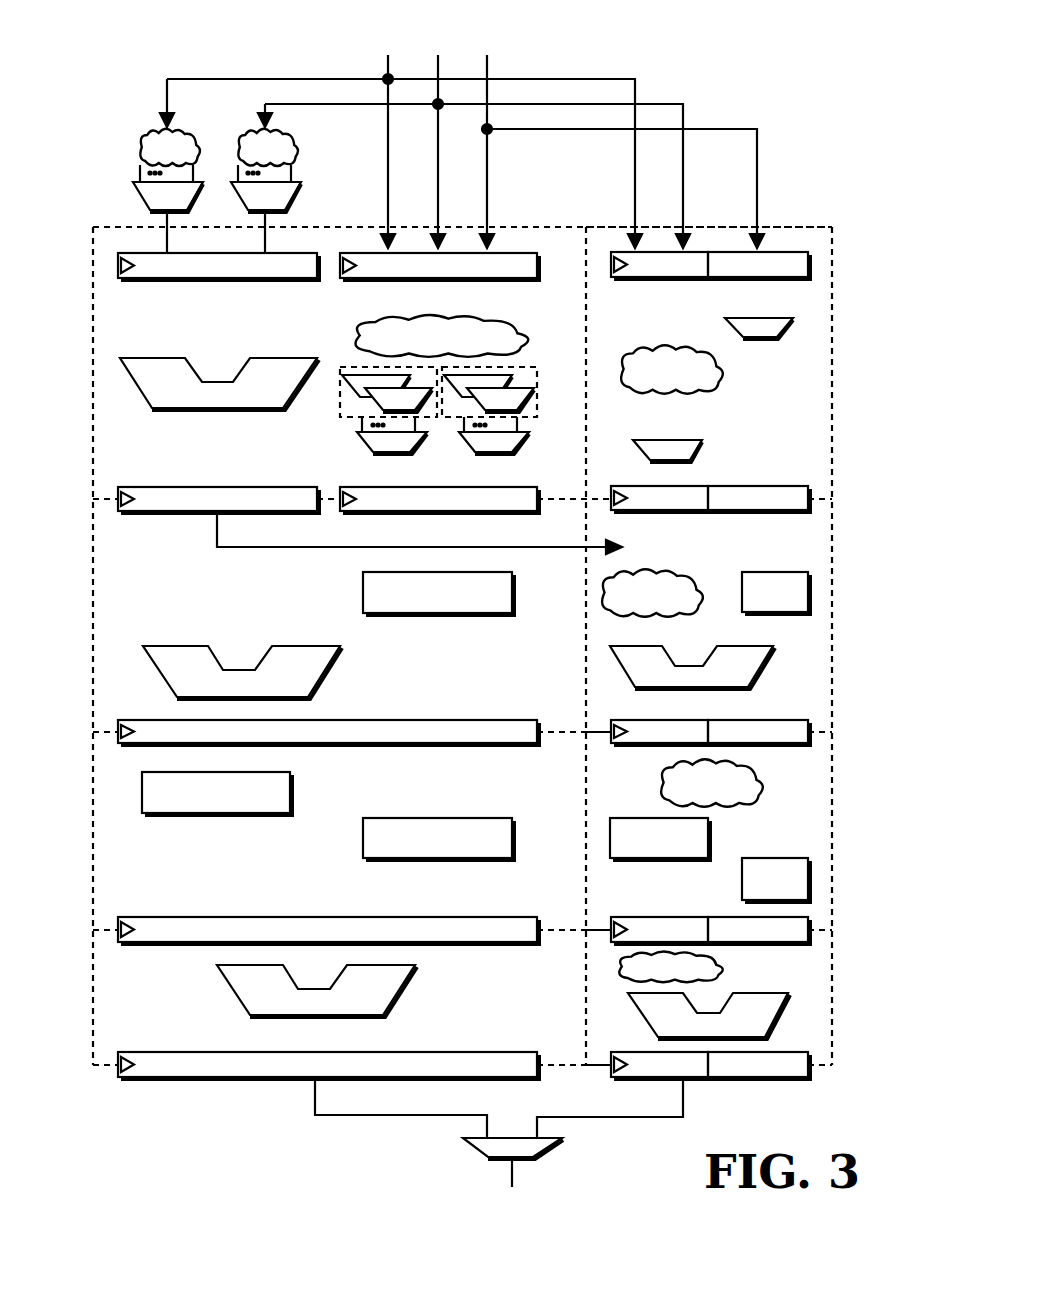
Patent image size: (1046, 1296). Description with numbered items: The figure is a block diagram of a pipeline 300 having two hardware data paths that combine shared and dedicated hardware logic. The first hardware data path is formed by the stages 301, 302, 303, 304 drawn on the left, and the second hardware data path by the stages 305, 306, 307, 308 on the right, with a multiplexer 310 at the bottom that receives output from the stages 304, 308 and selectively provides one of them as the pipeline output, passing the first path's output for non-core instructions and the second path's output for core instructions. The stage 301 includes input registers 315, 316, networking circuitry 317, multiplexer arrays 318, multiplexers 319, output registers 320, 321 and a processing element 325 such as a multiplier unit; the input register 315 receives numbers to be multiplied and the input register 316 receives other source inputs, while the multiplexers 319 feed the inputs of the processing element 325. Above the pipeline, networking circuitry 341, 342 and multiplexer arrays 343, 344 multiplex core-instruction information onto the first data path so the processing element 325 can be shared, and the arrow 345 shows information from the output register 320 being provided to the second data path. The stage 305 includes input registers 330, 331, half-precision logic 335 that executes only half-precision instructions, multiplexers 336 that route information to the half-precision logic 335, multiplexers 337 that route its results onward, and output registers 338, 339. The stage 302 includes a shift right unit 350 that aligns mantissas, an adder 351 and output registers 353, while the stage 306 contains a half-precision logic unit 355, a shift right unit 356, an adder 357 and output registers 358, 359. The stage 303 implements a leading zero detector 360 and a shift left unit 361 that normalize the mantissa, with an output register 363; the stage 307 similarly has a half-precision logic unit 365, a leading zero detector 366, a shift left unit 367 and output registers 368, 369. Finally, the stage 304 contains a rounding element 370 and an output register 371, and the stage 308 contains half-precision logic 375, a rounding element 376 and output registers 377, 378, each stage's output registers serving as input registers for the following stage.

The pipeline 300 is at (790, 77).
The stage 301 is at (92, 325).
The stage 302 is at (92, 618).
The stage 303 is at (92, 815).
The stage 304 is at (92, 987).
The stage 305 is at (832, 325).
The stage 306 is at (832, 618).
The stage 307 is at (832, 815).
The stage 308 is at (832, 987).
The multiplexer 310 is at (487, 1158).
The input register 315 is at (214, 289).
The input register 316 is at (360, 289).
The networking circuitry 317 is at (442, 336).
The multiplexer arrays 318 is at (537, 375).
The multiplexers 319 is at (490, 452).
The output register 320 is at (217, 485).
The output register 321 is at (360, 485).
The processing element 325 is at (219, 384).
The input register 330 is at (660, 286).
The input register 331 is at (742, 286).
The half-precision logic 335 is at (672, 369).
The multiplexers 336 is at (758, 340).
The multiplexers 337 is at (668, 440).
The output register 338 is at (685, 485).
The output register 339 is at (758, 485).
The networking circuitry 341 is at (170, 147).
The networking circuitry 342 is at (268, 147).
The multiplexer array 343 is at (168, 209).
The multiplexer array 344 is at (266, 209).
The arrow 345 is at (278, 548).
The shift right unit 350 is at (438, 593).
The adder 351 is at (242, 672).
The output registers 353 is at (365, 718).
The half-precision logic unit 355 is at (652, 593).
The shift right unit 356 is at (776, 593).
The adder 357 is at (692, 667).
The output register 358 is at (660, 718).
The output register 359 is at (758, 718).
The leading zero detector 360 is at (217, 793).
The shift left unit 361 is at (438, 839).
The output register 363 is at (328, 915).
The half-precision logic unit 365 is at (712, 783).
The leading zero detector 366 is at (660, 839).
The shift left unit 367 is at (776, 880).
The output register 368 is at (660, 915).
The output register 369 is at (733, 915).
The rounding element 370 is at (317, 991).
The output register 371 is at (217, 1050).
The half-precision logic 375 is at (670, 966).
The rounding element 376 is at (709, 1016).
The output register 377 is at (637, 1080).
The output register 378 is at (758, 1080).